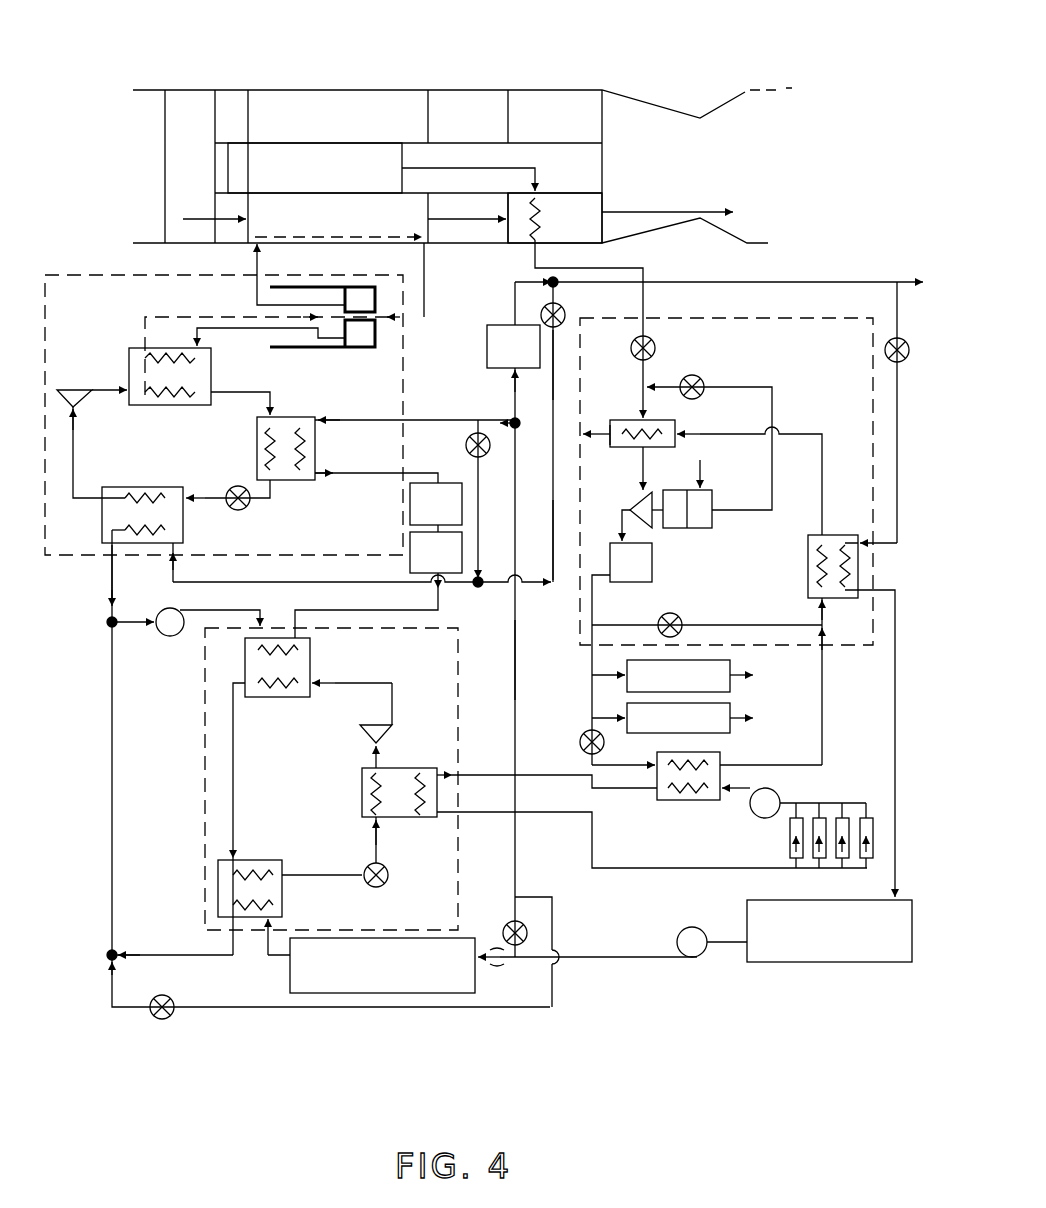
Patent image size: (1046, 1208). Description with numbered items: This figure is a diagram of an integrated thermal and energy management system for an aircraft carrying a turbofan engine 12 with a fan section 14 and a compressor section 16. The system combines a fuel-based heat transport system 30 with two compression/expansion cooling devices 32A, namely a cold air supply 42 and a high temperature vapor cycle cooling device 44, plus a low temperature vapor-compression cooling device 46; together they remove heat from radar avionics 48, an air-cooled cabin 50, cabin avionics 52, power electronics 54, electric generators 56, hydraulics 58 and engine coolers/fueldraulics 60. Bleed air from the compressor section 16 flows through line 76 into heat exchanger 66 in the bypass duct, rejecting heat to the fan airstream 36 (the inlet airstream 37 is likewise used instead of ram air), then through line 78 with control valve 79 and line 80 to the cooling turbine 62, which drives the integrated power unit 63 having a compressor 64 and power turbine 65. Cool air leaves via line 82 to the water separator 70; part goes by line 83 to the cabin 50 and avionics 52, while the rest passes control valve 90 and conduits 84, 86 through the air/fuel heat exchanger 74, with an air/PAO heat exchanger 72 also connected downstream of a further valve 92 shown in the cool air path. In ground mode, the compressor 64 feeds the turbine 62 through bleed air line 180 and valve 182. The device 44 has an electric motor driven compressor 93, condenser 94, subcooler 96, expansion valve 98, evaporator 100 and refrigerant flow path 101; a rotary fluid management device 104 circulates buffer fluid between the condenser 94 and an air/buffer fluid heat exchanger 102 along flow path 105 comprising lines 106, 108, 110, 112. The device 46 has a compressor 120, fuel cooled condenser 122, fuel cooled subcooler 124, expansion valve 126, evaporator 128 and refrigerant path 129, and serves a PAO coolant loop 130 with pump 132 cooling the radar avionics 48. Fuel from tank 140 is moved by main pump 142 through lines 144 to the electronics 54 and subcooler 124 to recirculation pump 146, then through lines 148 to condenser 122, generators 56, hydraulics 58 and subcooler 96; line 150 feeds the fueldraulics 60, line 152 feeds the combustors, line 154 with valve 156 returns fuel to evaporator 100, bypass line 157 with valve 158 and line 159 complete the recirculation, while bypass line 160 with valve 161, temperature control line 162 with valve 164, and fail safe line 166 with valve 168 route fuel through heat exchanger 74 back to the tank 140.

The turbofan engine 12 is at (120, 88).
The fan section 14 is at (203, 178).
The compressor section 16 is at (403, 158).
The fuel-based heat transport system 30 is at (573, 982).
The compression/expansion cooling device 32A is at (854, 314).
The fan airstream 36 is at (458, 222).
The airstream 37 is at (125, 165).
The cold air supply 42 is at (815, 315).
The high temperature vapor cycle cooling device 44 is at (107, 272).
The low temperature vapor-compression cycle cooling device 46 is at (202, 742).
The radar avionics 48 is at (780, 836).
The air-cooled cabin 50 is at (692, 658).
The cabin avionics 52 is at (731, 731).
The power electronics 54 is at (394, 991).
The electric generators 56 is at (452, 565).
The hydraulics 58 is at (452, 517).
The engine coolers/fueldraulics 60 is at (530, 358).
The cooling turbine 62 is at (628, 501).
The integrated power unit (IPU) 63 is at (701, 532).
The compressor 64 is at (703, 478).
The power turbine 65 is at (650, 488).
The first air/air heat exchanger 66 is at (590, 236).
The water separator 70 is at (653, 560).
The air/PAO heat exchanger 72 is at (690, 802).
The air/fuel heat exchanger 74 is at (836, 532).
The air conduit or line 76 is at (538, 177).
The air conduit or line 78 is at (645, 272).
The control valve 79 is at (657, 352).
The air conduit or line 80 is at (641, 480).
The air conduit or line 82 is at (553, 545).
The air conduit or line 83 is at (590, 702).
The conduit 84 is at (818, 618).
The conduit 86 is at (823, 463).
The control valve 90 is at (670, 613).
The valve 92 is at (580, 732).
The electric motor driven compressor 93 is at (68, 388).
The condenser 94 is at (163, 407).
The subcooler 96 is at (303, 483).
The expansion valve 98 is at (247, 503).
The evaporator 100 is at (184, 518).
The refrigerant flow path 101 is at (84, 467).
The air/buffer fluid heat exchanger 102 is at (365, 228).
The rotary fluid management device (RFMD) 104 is at (312, 350).
The flow path 105 is at (138, 332).
The conduit or line 106 is at (208, 315).
The conduit or line 108 is at (255, 290).
The conduit or line 110 is at (425, 290).
The conduit or line 112 is at (230, 330).
The compressor 120 is at (388, 733).
The fuel cooled condenser 122 is at (260, 699).
The fuel cooled subcooler 124 is at (250, 859).
The expansion valve 126 is at (374, 888).
The refrigerant cooled evaporator 128 is at (362, 810).
The refrigerant flow path 129 is at (268, 772).
The PAO coolant flow loop 130 is at (688, 872).
The PAO coolant recirculating pump 132 is at (778, 795).
The fuel tank or supply 140 is at (855, 955).
The main fuel pump 142 is at (703, 956).
The fuel conduits or lines 144 is at (112, 712).
The high flow fuel recirculation pump 146 is at (160, 636).
The fuel conduits or lines 148 is at (326, 420).
The fuel conduit or line 150 is at (511, 383).
The fuel conduit or line 152 is at (722, 282).
The fuel conduit or line 154 is at (556, 360).
The control valve 156 is at (563, 307).
The fuel conduit or line 157 is at (505, 555).
The control valve 158 is at (478, 420).
The fuel conduit or line 159 is at (112, 573).
The high fuel flow bypass conduit or line 160 is at (514, 663).
The control valve 161 is at (503, 923).
The high fuel flow temperature control conduit or line 162 is at (330, 1010).
The control valve 164 is at (155, 1020).
The fail safe fuel flow conduit or line 166 is at (896, 403).
The control valve 168 is at (886, 362).
The bleed air flow line 180 is at (772, 402).
The bleed air control valve 182 is at (695, 372).